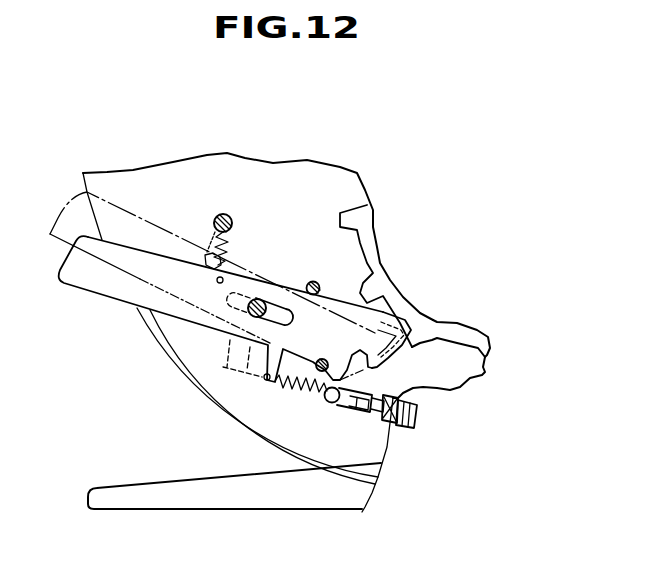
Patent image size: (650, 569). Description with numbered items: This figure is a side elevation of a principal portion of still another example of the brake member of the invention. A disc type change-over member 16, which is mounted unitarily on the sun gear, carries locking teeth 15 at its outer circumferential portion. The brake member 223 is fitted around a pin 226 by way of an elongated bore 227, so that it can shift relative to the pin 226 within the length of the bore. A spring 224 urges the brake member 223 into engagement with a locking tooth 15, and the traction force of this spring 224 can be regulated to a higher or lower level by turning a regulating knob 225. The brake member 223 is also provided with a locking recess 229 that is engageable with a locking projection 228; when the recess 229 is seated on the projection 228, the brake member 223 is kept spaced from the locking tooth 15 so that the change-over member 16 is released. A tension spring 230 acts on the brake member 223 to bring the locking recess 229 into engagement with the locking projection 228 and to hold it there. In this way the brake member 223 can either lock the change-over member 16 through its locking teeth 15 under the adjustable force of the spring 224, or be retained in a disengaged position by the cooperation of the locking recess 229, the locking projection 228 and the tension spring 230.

The locking teeth 15 is at (362, 292).
The change-over member 16 is at (462, 333).
The brake member 223 is at (182, 308).
The spring 224 is at (321, 401).
The regulating knob 225 is at (417, 414).
The pin 226 is at (262, 300).
The elongated bore 227 is at (279, 306).
The locking projection 228 is at (312, 383).
The locking recess 229 is at (385, 315).
The tension spring 230 is at (225, 262).